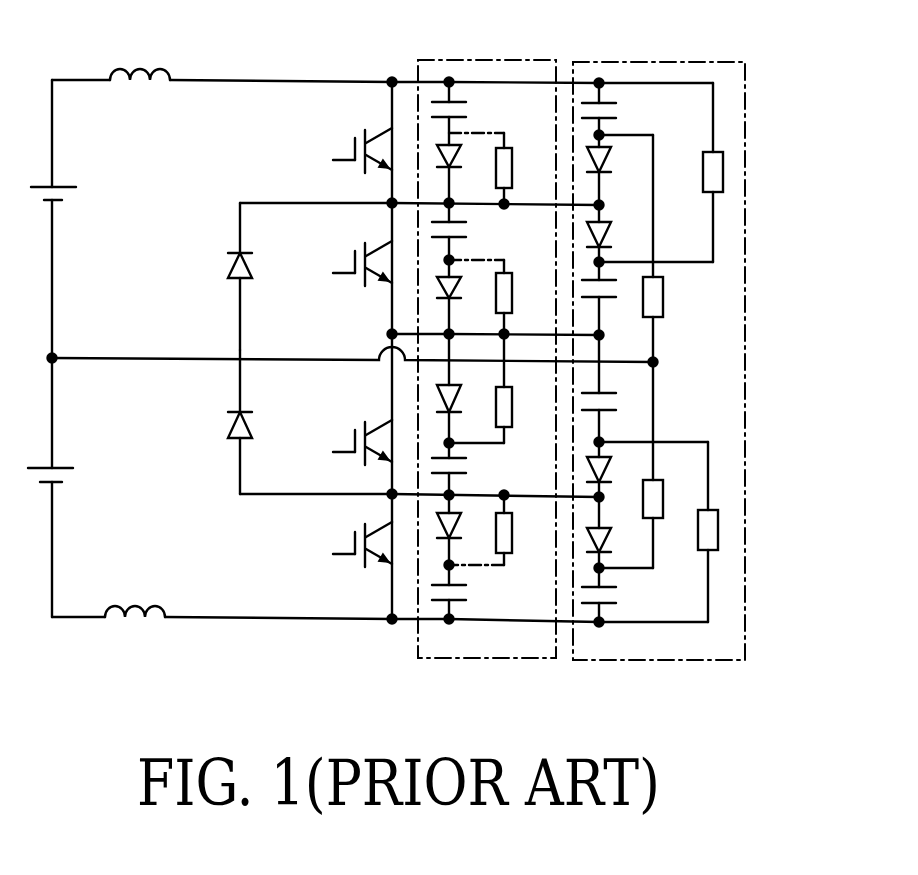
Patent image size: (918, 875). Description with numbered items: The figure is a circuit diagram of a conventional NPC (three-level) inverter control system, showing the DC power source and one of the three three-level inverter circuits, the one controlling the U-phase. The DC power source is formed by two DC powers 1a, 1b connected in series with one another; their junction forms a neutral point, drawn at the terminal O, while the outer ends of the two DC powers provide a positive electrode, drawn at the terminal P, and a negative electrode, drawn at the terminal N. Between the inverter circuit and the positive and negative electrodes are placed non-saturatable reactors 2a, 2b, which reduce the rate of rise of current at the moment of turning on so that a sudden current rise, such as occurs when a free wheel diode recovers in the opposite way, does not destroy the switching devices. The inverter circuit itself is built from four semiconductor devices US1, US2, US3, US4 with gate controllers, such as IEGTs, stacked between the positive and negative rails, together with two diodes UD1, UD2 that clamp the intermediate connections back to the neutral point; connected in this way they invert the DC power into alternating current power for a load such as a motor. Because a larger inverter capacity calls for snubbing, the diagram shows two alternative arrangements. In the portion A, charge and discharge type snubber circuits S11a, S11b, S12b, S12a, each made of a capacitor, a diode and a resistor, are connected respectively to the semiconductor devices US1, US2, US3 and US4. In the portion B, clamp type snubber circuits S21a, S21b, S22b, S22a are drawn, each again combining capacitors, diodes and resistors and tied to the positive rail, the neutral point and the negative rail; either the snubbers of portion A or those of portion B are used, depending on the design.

The DC power 1a is at (80, 192).
The DC power 1b is at (77, 475).
The non-saturatable reactor 2a is at (146, 90).
The non-saturatable reactor 2b is at (147, 604).
The diode UD1 is at (232, 272).
The diode UD2 is at (230, 427).
The semiconductor device US1 is at (342, 150).
The semiconductor device US2 is at (345, 263).
The semiconductor device US3 is at (343, 440).
The semiconductor device US4 is at (343, 545).
The charge and discharge type snubber circuit S11a is at (550, 123).
The charge and discharge type snubber circuit S11b is at (550, 249).
The charge and discharge type snubber circuit S12b is at (547, 481).
The charge and discharge type snubber circuit S12a is at (547, 611).
The clamp type snubber circuit S21a is at (642, 124).
The clamp type snubber circuit S21b is at (680, 250).
The clamp type snubber circuit S22b is at (622, 403).
The clamp type snubber circuit S22a is at (643, 578).
The positive DC terminal P is at (283, 65).
The negative DC terminal N is at (281, 602).
The neutral point terminal O is at (340, 358).
The portion A is at (487, 344).
The portion B is at (659, 345).